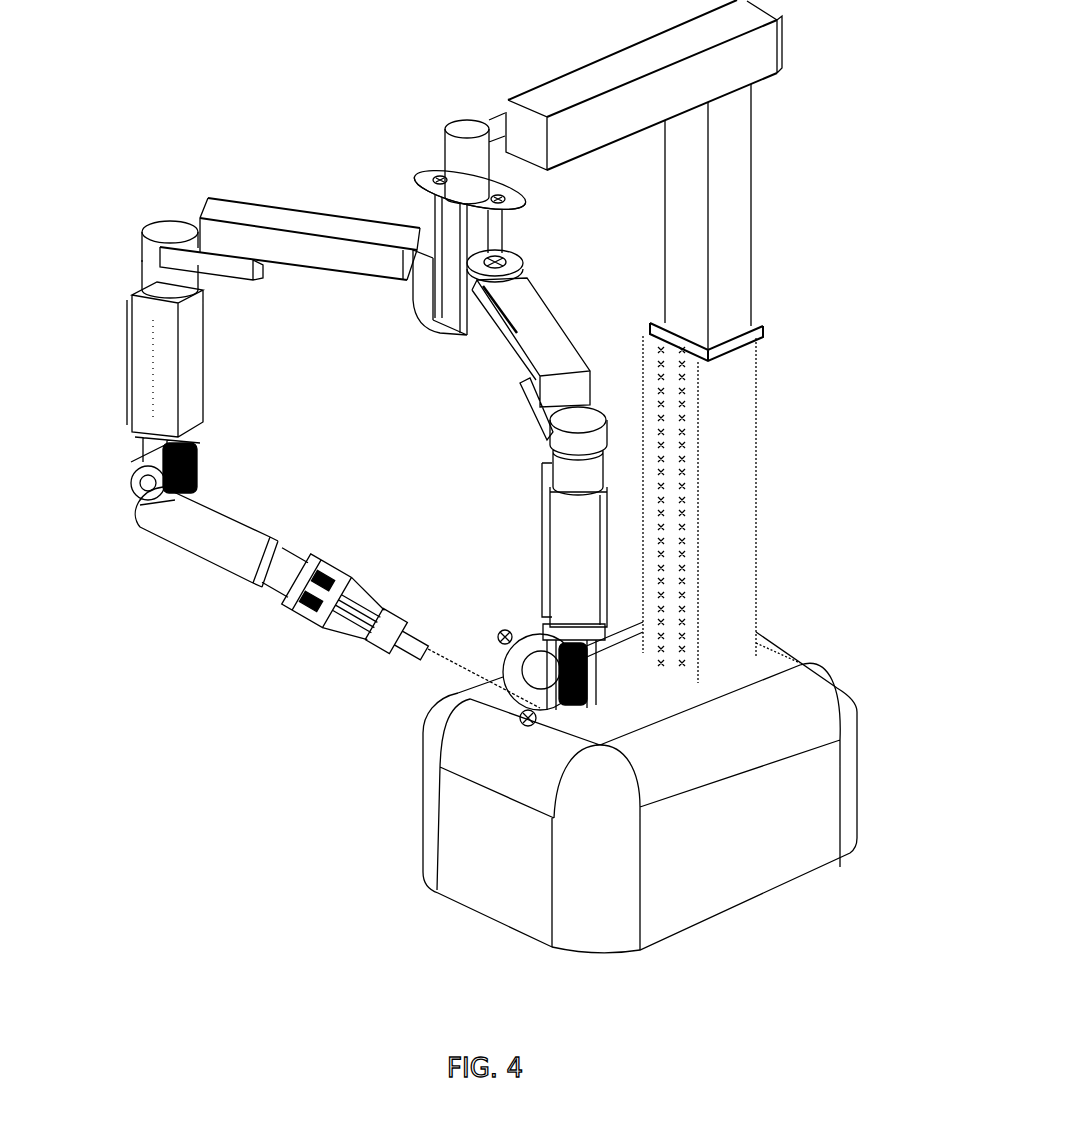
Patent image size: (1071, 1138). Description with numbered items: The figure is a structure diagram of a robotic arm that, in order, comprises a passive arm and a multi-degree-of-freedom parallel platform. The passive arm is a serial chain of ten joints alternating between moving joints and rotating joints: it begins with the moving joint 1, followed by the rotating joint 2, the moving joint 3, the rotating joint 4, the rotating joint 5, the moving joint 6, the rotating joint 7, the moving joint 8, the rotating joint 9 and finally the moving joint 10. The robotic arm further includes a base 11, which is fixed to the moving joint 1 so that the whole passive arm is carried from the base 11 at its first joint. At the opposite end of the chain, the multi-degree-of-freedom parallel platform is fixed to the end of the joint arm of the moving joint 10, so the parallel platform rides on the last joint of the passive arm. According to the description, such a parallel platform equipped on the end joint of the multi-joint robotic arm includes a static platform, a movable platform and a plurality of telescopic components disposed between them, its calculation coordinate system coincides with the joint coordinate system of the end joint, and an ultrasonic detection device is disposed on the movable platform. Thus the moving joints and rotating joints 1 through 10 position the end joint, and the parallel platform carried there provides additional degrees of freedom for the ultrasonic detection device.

The moving joint 1 is at (722, 215).
The rotating joint 2 is at (505, 98).
The moving joint 3 is at (458, 160).
The rotating joint 4 is at (432, 262).
The rotating joint 5 is at (225, 272).
The moving joint 6 is at (160, 222).
The rotating joint 7 is at (160, 274).
The moving joint 8 is at (200, 398).
The rotating joint 9 is at (203, 466).
The moving joint 10 is at (233, 530).
The base 11 is at (787, 710).